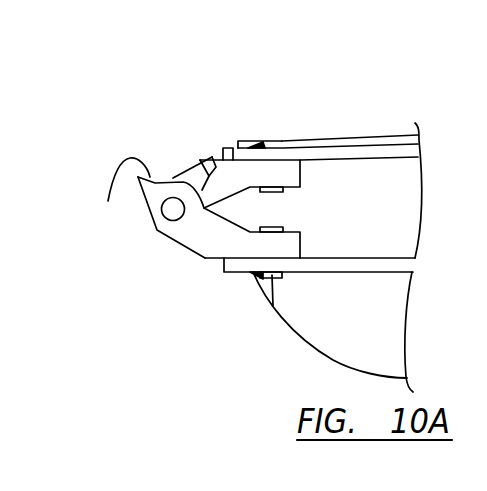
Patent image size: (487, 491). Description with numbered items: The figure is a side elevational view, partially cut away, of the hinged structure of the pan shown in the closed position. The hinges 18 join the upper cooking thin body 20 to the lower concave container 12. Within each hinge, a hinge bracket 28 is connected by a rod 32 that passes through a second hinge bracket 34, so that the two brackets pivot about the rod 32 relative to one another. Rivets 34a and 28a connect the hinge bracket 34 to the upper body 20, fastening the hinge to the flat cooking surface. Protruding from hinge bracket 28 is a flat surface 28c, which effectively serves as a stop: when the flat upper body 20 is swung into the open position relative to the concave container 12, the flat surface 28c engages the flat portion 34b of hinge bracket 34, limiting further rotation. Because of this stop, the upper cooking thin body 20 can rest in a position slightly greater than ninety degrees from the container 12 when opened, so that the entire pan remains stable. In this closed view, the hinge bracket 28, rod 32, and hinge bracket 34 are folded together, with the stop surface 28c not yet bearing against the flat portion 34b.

The concave container 12 is at (352, 347).
The hinges 18 is at (165, 130).
The upper cooking thin body 20 is at (367, 135).
The hinge bracket 28 is at (208, 247).
The rivet 28a is at (271, 307).
The flat surface 28c is at (120, 193).
The rod 32 is at (172, 209).
The hinge bracket 34 is at (241, 132).
The rivet 34a is at (275, 142).
The flat portion 34b is at (234, 168).